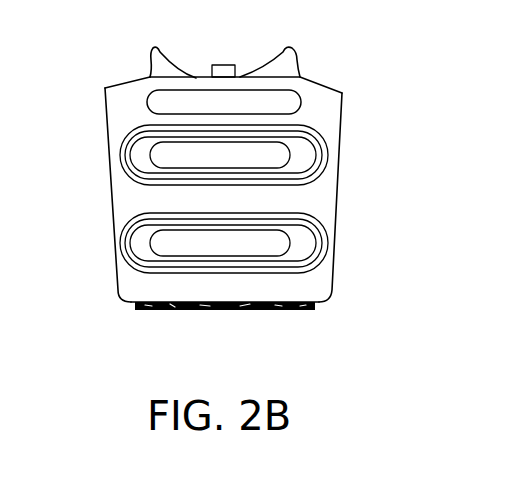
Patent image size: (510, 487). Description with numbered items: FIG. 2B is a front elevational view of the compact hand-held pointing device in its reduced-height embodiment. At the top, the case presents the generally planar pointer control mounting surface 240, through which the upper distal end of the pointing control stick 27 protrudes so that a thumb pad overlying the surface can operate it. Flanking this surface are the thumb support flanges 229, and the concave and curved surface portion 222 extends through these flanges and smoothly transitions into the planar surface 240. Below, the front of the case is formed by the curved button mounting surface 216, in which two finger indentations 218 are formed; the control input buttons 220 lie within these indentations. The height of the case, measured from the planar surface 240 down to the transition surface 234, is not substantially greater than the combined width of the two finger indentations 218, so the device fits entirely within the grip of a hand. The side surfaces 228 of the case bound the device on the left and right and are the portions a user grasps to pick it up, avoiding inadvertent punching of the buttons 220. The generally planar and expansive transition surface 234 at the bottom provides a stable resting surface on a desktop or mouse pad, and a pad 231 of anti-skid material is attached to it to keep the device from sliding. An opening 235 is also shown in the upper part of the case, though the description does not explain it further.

The pointing control stick 27 is at (223, 76).
The curved button mounting surface 216 is at (245, 210).
The finger indentations 218 is at (137, 160).
The control input buttons 220 is at (245, 166).
The concave and curved surface portion 222 is at (252, 71).
The side surfaces 228 is at (108, 196).
The thumb support flanges 229 is at (155, 50).
The pad 231 is at (230, 309).
The transition surface 234 is at (253, 315).
The slot 235 is at (277, 100).
The generally planar surface 240 is at (151, 73).